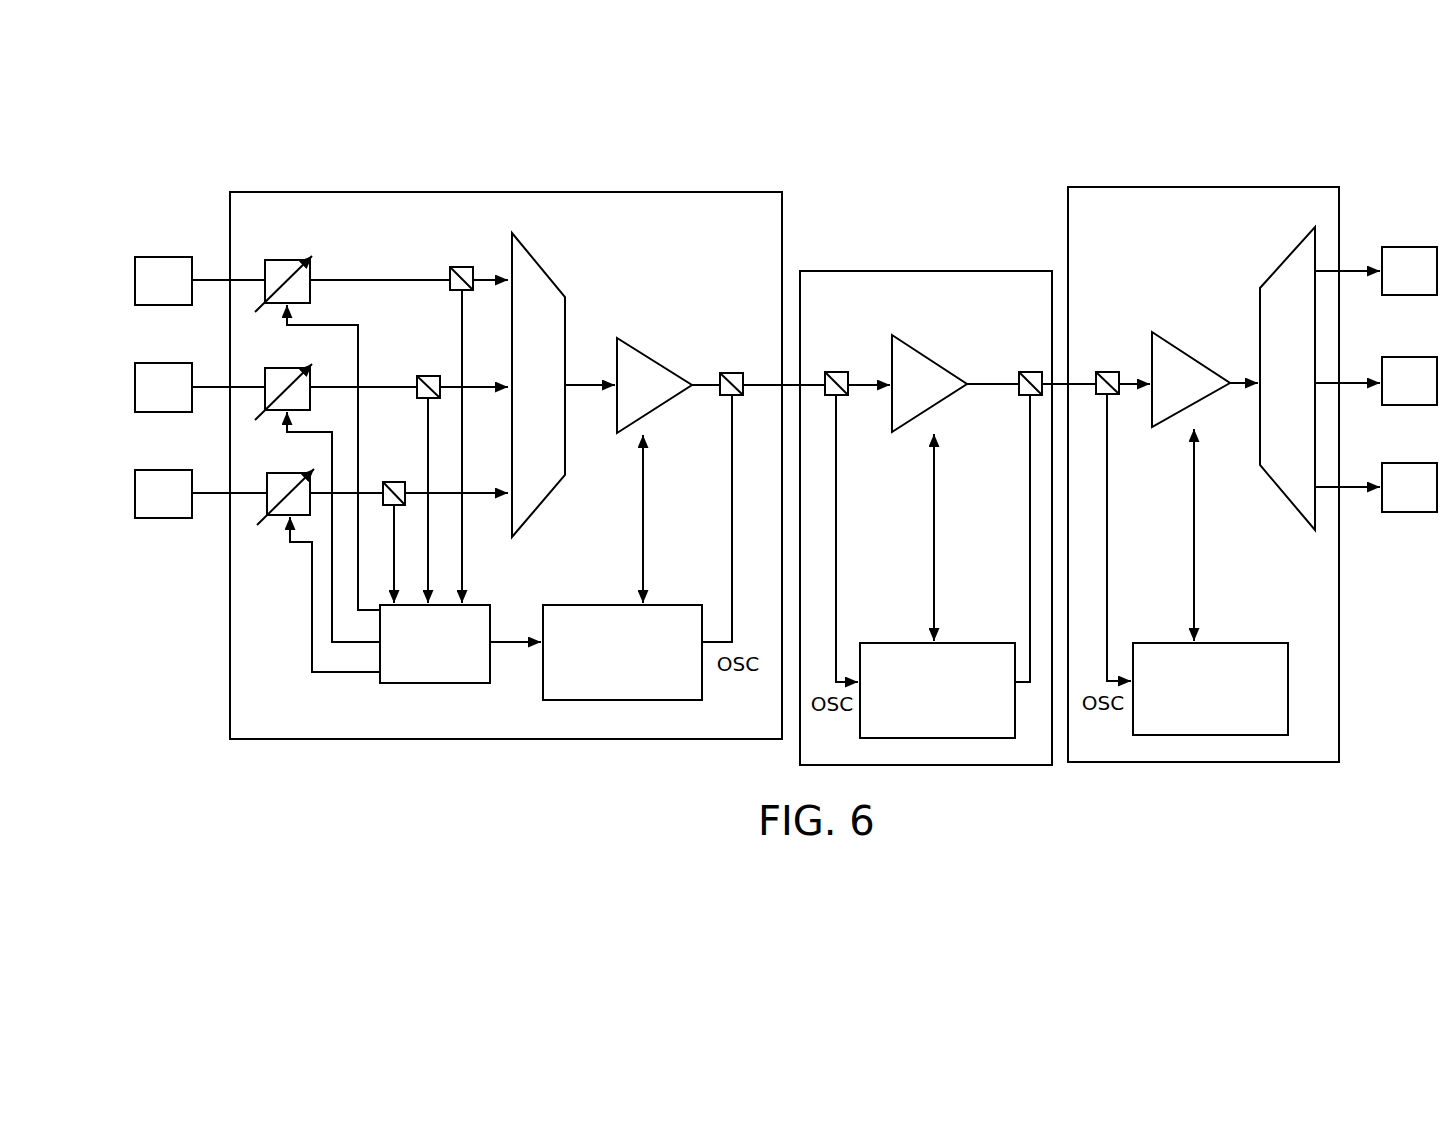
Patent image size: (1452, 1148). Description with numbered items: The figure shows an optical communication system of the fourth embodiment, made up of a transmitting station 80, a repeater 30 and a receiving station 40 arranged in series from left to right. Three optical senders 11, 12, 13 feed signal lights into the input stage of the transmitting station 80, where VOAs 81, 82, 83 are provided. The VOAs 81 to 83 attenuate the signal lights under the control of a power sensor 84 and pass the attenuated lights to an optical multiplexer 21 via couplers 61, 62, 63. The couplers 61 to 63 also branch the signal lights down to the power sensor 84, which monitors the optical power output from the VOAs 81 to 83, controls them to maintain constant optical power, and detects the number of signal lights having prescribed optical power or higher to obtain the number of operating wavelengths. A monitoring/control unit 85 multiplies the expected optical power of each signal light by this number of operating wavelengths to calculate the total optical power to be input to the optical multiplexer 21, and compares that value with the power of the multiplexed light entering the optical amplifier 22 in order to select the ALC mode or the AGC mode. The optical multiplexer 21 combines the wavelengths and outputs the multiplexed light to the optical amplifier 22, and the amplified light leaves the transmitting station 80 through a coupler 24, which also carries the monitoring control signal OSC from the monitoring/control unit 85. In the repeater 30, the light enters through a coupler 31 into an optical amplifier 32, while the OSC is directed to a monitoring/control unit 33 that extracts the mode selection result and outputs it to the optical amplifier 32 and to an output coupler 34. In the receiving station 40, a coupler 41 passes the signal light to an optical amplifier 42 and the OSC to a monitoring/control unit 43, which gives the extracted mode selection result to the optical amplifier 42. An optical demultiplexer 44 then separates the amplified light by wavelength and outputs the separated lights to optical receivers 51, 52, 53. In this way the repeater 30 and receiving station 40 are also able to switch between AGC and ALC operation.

The optical sender 11 is at (148, 259).
The optical sender 12 is at (148, 365).
The optical sender 13 is at (148, 472).
The optical multiplexer 21 is at (550, 264).
The optical amplifier 22 is at (660, 365).
The coupler 24 is at (735, 372).
The repeater 30 is at (870, 271).
The coupler 31 is at (838, 372).
The optical amplifier 32 is at (928, 360).
The monitoring/control unit 33 is at (958, 643).
The coupler 34 is at (1030, 372).
The receiving station 40 is at (1130, 187).
The coupler 41 is at (1105, 372).
The optical amplifier 42 is at (1188, 356).
The monitoring/control unit 43 is at (1218, 643).
The optical demultiplexer 44 is at (1290, 255).
The optical receiver 51 is at (1390, 249).
The optical receiver 52 is at (1390, 359).
The optical receiver 53 is at (1390, 465).
The coupler 61 is at (460, 266).
The coupler 62 is at (424, 376).
The coupler 63 is at (392, 481).
The transmitting station 80 is at (375, 192).
The VOA 81 is at (290, 260).
The VOA 82 is at (298, 368).
The VOA 83 is at (278, 518).
The power sensor 84 is at (438, 684).
The monitoring/control unit 85 is at (686, 605).